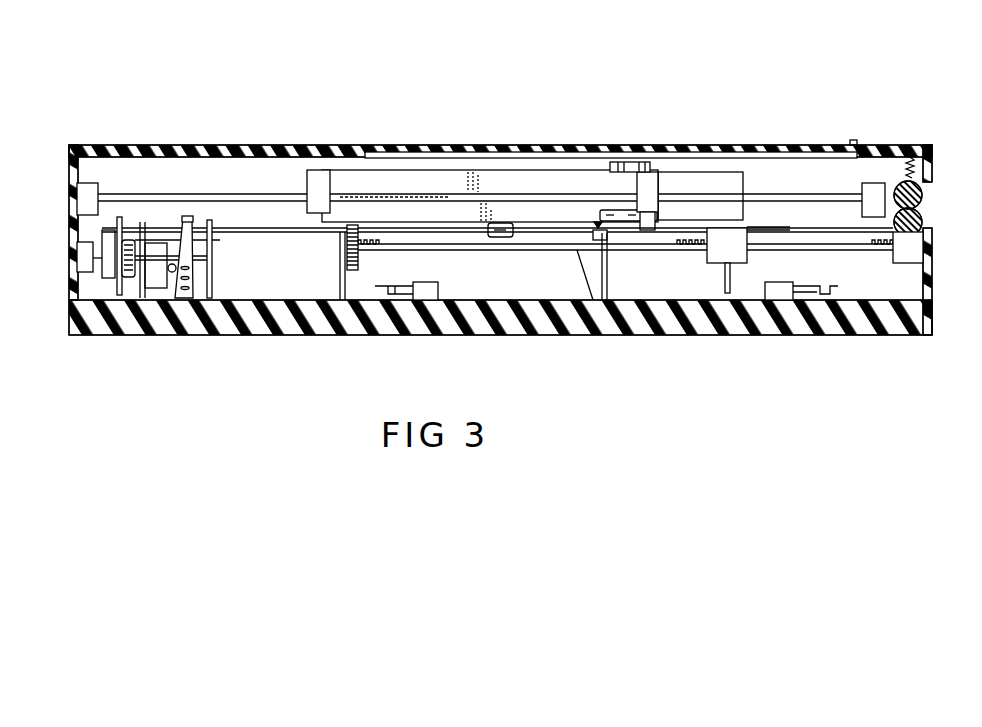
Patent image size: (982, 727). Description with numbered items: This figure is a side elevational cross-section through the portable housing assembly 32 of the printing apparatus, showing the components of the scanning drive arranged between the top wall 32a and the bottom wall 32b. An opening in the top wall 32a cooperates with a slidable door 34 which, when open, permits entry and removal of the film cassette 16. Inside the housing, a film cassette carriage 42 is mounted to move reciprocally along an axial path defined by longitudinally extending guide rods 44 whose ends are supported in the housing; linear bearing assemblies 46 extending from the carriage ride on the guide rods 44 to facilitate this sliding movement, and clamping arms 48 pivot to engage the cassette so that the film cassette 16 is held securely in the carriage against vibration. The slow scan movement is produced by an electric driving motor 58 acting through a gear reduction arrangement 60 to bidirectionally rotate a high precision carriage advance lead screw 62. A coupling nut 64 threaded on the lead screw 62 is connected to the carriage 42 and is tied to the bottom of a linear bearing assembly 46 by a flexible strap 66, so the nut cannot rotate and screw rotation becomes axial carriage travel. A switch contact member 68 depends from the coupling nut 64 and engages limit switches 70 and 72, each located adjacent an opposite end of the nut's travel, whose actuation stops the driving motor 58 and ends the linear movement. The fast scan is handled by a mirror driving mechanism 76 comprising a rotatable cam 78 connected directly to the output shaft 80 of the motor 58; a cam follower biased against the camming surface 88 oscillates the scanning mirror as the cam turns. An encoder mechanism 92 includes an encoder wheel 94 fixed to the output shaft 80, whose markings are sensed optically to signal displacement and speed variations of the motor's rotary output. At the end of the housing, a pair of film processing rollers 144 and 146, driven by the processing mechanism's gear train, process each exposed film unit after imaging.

The housing assembly 32 is at (506, 208).
The top wall 32a is at (898, 152).
The bottom wall 32b is at (353, 337).
The door 34 is at (772, 152).
The film cassette 16 is at (712, 182).
The film cassette carriage 42 is at (418, 182).
The guide rods 44 is at (177, 196).
The linear bearing assemblies 46 is at (318, 178).
The clamping arms 48 is at (625, 163).
The driving motor 58 is at (250, 283).
The gear reduction arrangement 60 is at (370, 258).
The carriage advance lead screw 62 is at (503, 252).
The coupling nut 64 is at (738, 256).
The flexible strap 66 is at (668, 233).
The switch contact member 68 is at (724, 283).
The limit switch 70 is at (432, 282).
The limit switch 72 is at (784, 282).
The mirror driving mechanism 76 is at (193, 292).
The rotatable cam 78 is at (186, 217).
The output shaft 80 is at (214, 242).
The camming surface 88 is at (171, 272).
The encoder mechanism 92 is at (90, 233).
The encoder wheel 94 is at (117, 288).
The film processing roller 144 is at (925, 195).
The film processing roller 146 is at (925, 218).